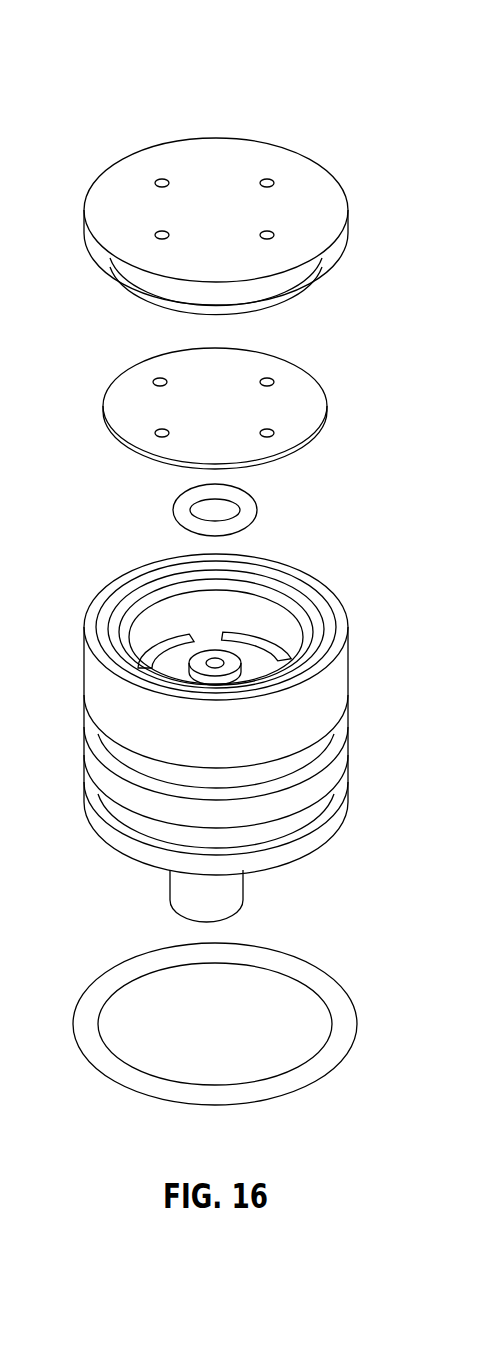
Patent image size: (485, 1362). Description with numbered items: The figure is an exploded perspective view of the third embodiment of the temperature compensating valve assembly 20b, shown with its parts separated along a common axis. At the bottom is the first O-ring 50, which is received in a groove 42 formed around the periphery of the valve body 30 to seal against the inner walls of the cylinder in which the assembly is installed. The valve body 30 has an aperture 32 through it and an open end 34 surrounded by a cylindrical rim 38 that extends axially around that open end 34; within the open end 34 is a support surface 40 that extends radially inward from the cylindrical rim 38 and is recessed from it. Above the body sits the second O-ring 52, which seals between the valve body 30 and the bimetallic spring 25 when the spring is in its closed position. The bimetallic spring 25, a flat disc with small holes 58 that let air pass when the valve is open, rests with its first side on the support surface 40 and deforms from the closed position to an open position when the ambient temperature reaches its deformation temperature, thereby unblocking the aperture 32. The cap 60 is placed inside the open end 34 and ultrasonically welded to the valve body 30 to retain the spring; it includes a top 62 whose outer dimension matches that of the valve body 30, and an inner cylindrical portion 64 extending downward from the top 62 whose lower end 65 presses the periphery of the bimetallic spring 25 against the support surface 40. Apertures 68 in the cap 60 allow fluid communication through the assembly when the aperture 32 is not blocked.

The temperature compensating valve assembly 20b is at (329, 66).
The cap 60 is at (205, 153).
The top 62 is at (332, 248).
The inner cylindrical portion 64 is at (273, 302).
The lower end 65 is at (143, 303).
The aperture 68 is at (157, 232).
The bimetallic spring 25 is at (250, 367).
The small holes 58 is at (158, 428).
The second O-ring 52 is at (245, 507).
The valve body 30 is at (323, 827).
The cylindrical rim 38 is at (333, 614).
The support surface 40 is at (150, 611).
The open end 34 is at (263, 630).
The aperture 32 is at (215, 663).
The groove 42 is at (333, 748).
The first O-ring 50 is at (340, 1015).